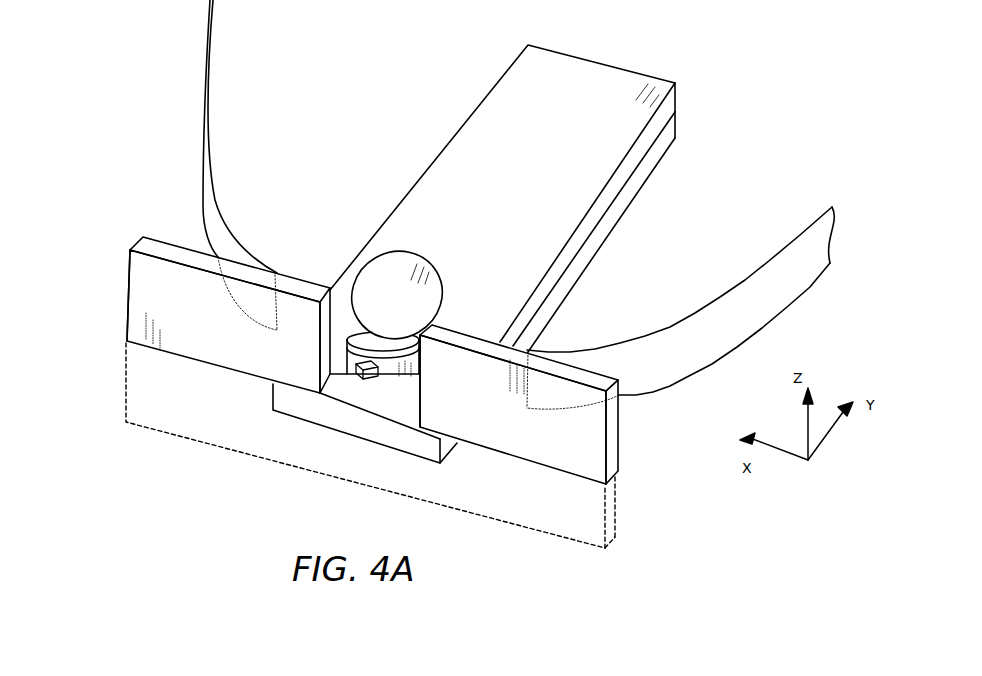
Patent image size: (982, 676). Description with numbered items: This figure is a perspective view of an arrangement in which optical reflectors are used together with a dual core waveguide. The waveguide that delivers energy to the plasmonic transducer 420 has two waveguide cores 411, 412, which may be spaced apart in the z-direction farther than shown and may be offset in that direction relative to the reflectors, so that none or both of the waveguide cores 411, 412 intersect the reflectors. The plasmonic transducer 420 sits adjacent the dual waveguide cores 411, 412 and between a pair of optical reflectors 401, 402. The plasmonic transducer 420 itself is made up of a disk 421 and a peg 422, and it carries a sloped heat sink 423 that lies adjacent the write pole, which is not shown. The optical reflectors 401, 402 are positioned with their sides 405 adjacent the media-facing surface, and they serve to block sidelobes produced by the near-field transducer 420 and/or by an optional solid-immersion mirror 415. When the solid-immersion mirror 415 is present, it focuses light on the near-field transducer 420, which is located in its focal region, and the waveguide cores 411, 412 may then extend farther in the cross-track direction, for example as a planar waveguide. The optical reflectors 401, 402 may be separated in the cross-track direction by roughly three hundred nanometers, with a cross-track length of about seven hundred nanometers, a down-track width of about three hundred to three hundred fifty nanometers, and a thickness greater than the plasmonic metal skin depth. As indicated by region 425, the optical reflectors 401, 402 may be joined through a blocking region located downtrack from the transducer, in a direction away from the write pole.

The optical reflector 401 is at (141, 320).
The optical reflector 402 is at (620, 476).
The sides 405 is at (207, 367).
The waveguide core 411 is at (542, 185).
The waveguide core 412 is at (678, 124).
The solid-immersion mirror 415 is at (208, 72).
The plasmonic transducer 420 is at (456, 215).
The disk 421 is at (395, 376).
The peg 422 is at (360, 379).
The sloped heat sink 423 is at (383, 270).
The region 425 is at (195, 441).